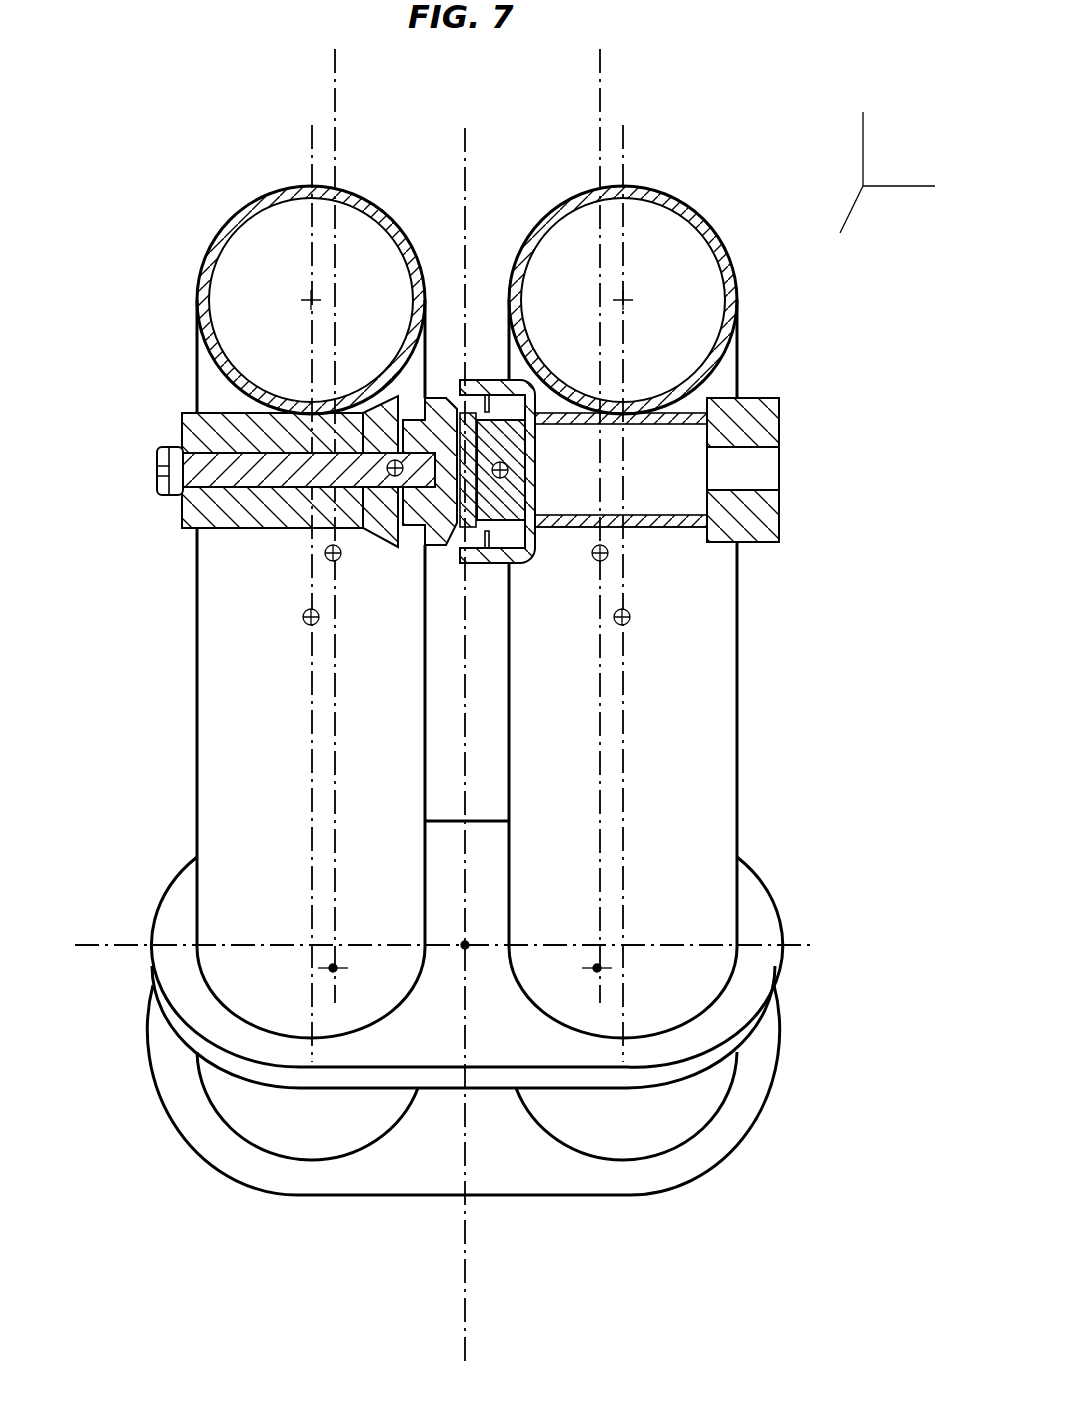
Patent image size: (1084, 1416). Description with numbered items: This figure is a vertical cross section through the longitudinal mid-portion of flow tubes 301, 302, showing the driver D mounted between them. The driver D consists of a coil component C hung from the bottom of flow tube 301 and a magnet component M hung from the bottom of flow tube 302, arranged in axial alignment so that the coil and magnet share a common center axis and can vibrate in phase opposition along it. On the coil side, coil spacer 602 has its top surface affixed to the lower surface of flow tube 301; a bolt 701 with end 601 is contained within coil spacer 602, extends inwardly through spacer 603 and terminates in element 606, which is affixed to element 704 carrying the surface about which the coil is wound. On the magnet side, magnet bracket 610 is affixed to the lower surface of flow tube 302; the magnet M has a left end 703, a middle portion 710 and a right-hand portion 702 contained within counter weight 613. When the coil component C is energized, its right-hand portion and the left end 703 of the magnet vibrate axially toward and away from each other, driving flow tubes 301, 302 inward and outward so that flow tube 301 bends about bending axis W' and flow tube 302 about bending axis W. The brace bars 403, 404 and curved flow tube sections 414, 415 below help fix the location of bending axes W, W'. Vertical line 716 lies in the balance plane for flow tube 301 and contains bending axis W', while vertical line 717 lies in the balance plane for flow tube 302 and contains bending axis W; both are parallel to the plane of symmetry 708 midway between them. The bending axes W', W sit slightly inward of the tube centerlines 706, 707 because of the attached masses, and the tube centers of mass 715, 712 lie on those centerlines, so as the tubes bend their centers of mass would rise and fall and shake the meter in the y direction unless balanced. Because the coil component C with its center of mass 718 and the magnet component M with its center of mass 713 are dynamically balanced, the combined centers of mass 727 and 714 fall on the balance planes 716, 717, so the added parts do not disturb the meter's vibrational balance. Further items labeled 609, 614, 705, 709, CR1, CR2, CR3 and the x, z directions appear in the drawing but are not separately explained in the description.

The flow tube 301 is at (197, 332).
The flow tube 302 is at (737, 340).
The inner brace bar 403 is at (765, 915).
The outer end brace bar 404 is at (755, 1100).
The curved flow tube section 414 is at (320, 1150).
The curved flow tube section 415 is at (615, 1150).
The bolt end 601 is at (170, 495).
The coil spacer 602 is at (182, 415).
The spacer 603 is at (395, 548).
The terminating element 606 is at (440, 548).
The cup holder 609 is at (480, 563).
The magnet bracket 610 is at (648, 527).
The counter weight 613 is at (779, 525).
The block bottom face 614 is at (185, 528).
The bolt 701 is at (190, 465).
The right hand portion of magnet 702 is at (712, 470).
The left end of magnet 703 is at (528, 563).
The coil winding element 704 is at (540, 412).
The cup upper tab 705 is at (483, 407).
The flow tube centerline 706 is at (312, 142).
The flow tube centerline 707 is at (624, 150).
The plane of symmetry 708 is at (466, 150).
The horizontal axis 709 is at (100, 950).
The middle portion of magnet 710 is at (520, 528).
The flow tube center of mass 712 is at (630, 617).
The center of mass of magnet component 713 is at (508, 468).
The combined center of mass 714 is at (600, 562).
The flow tube center of mass 715 is at (305, 620).
The balance plane 716 is at (335, 78).
The balance plane 717 is at (600, 78).
The center of mass of coil component 718 is at (395, 460).
The combined center of mass 727 is at (325, 553).
The coil component C is at (164, 418).
The magnet component M is at (792, 414).
The driver D is at (832, 448).
The rotation center 1 CR1 is at (345, 968).
The rotation center 2 CR2 is at (592, 968).
The rotation center 3 CR3 is at (465, 950).
The bending axis W is at (570, 1021).
The bending axis W' is at (371, 1017).
The x axis x is at (843, 224).
The Y-direction y is at (857, 133).
The z axis z is at (909, 187).